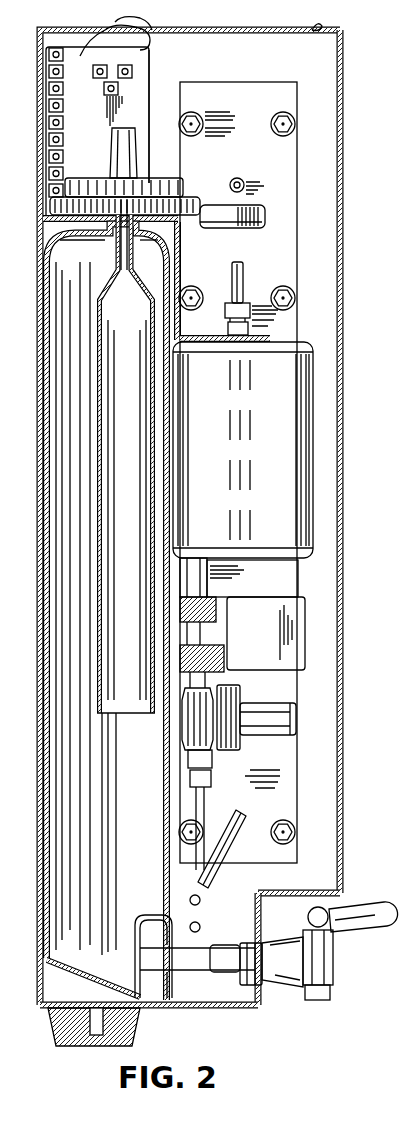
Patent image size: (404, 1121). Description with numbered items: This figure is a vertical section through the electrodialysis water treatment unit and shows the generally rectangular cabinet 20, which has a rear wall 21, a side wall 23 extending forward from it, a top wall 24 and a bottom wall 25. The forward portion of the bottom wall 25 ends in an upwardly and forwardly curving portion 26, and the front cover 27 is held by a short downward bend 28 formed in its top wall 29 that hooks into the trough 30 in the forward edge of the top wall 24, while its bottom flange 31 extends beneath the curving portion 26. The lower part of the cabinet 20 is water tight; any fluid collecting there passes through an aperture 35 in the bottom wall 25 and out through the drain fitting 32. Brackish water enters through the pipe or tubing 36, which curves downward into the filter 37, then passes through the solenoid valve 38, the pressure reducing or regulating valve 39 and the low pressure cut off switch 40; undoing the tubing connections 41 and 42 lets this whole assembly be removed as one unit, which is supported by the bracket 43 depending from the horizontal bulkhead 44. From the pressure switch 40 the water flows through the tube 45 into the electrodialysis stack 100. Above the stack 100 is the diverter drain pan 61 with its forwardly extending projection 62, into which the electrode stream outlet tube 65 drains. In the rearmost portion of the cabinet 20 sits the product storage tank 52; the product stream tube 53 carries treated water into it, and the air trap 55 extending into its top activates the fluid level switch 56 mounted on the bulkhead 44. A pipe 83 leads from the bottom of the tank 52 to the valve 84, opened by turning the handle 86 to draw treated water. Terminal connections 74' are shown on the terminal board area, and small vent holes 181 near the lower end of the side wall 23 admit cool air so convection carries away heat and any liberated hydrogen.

The cabinet 20 is at (206, 529).
The rear wall 21 is at (104, 612).
The side wall 23 is at (232, 66).
The top wall 24 is at (112, 123).
The bottom wall 25 is at (200, 1006).
The upwardly and forwardly curving portion 26 is at (265, 893).
The front cover 27 is at (343, 545).
The short downward bend 28 is at (150, 32).
The top wall of front cover 29 is at (310, 30).
The trough 30 is at (146, 44).
The bottom flange 31 is at (300, 897).
The drain fitting 32 is at (60, 1042).
The aperture 35 is at (98, 996).
The pipe or tubing 36 is at (229, 288).
The filter 37 is at (227, 438).
The solenoid valve 38 is at (244, 639).
The pressure reducing or regulating valve 39 is at (212, 725).
The low pressure cut off switch 40 is at (218, 740).
The tubing connection 41 is at (226, 318).
The tubing connection 42 is at (208, 780).
The bracket 43 is at (182, 284).
The horizontal bulkhead 44 is at (96, 235).
The tube 45 is at (234, 832).
The product storage tank 52 is at (43, 792).
The product stream tube 53 is at (108, 842).
The air trap 55 is at (97, 485).
The fluid level switch 56 is at (118, 152).
The diverter drain pan 61 is at (232, 203).
The forwardly extending projection 62 is at (236, 226).
The electrode stream outlet tube 65 is at (246, 186).
The terminals 74' is at (76, 122).
The pipe 83 is at (216, 968).
The valve 84 is at (340, 972).
The handle 86 is at (372, 905).
The electrodialysis stack 100 is at (290, 790).
The vent holes 181 is at (200, 927).